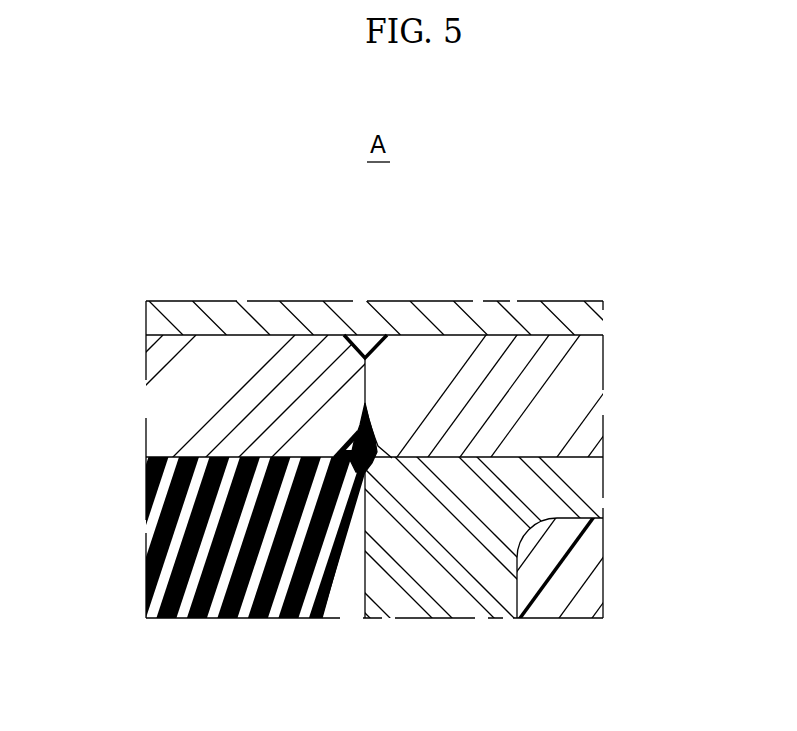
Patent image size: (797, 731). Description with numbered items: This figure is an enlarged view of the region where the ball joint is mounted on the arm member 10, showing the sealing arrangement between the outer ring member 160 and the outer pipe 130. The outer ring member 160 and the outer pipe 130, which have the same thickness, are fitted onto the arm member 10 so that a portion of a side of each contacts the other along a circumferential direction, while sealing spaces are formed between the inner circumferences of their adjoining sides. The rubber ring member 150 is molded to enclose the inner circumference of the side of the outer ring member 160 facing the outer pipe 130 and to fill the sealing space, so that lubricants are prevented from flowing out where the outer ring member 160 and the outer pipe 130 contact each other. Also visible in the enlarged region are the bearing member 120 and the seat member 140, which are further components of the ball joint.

The arm member 10 is at (488, 322).
The bearing member 120 is at (560, 587).
The outer pipe 130 is at (540, 433).
The seat member 140 is at (547, 500).
The rubber ring member 150 is at (173, 542).
The outer ring member 160 is at (177, 407).